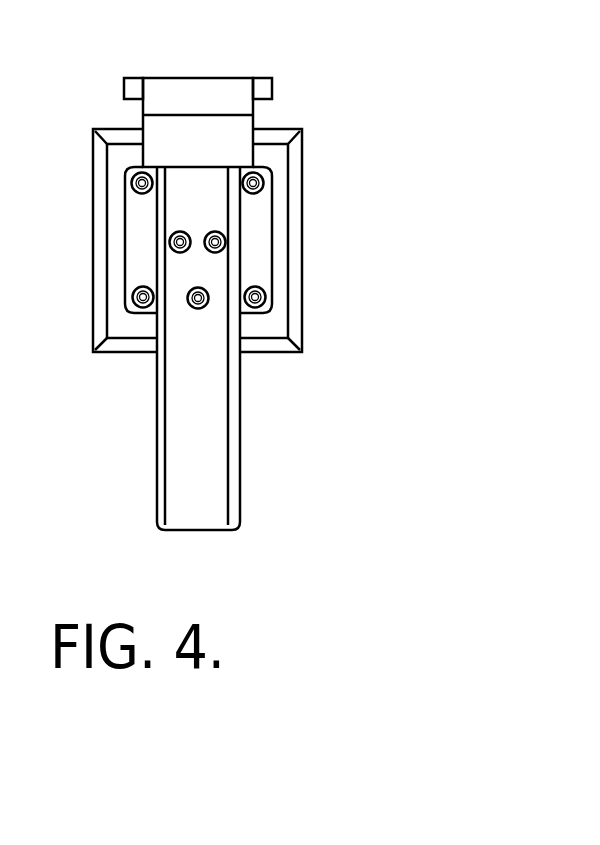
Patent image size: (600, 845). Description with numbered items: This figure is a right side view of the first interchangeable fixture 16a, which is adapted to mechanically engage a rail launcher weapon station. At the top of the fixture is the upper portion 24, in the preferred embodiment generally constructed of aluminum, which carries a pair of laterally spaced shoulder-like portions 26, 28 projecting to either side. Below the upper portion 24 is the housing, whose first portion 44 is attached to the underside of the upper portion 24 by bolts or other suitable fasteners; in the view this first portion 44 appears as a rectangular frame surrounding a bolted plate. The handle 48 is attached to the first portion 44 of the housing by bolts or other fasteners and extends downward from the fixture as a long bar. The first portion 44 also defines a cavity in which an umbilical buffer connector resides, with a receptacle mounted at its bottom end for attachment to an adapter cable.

The first interchangeable fixture 16a is at (366, 117).
The upper portion 24 is at (243, 108).
The shoulder-like portion 26 is at (125, 80).
The shoulder-like portion 28 is at (272, 78).
The first portion of the housing 44 is at (293, 221).
The handle 48 is at (212, 473).